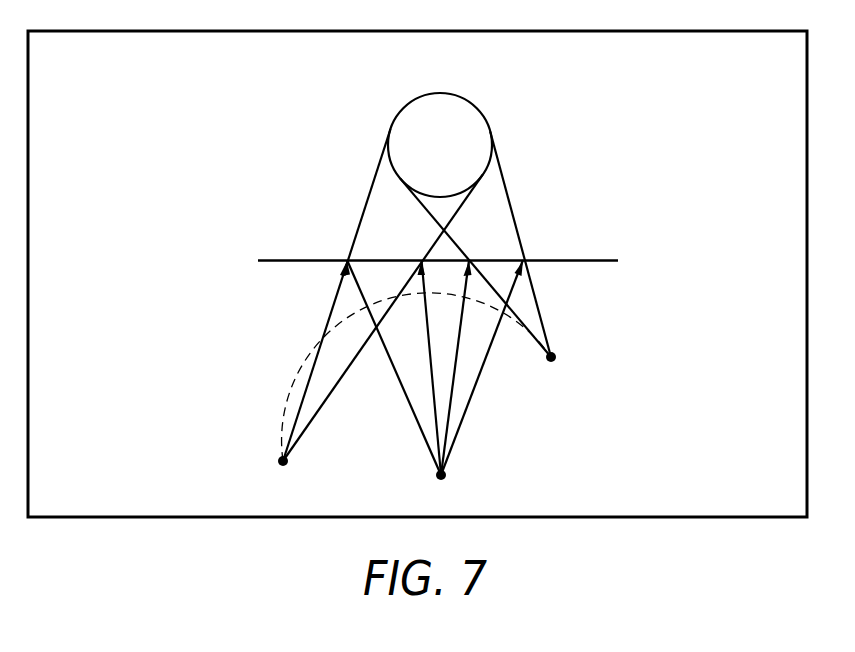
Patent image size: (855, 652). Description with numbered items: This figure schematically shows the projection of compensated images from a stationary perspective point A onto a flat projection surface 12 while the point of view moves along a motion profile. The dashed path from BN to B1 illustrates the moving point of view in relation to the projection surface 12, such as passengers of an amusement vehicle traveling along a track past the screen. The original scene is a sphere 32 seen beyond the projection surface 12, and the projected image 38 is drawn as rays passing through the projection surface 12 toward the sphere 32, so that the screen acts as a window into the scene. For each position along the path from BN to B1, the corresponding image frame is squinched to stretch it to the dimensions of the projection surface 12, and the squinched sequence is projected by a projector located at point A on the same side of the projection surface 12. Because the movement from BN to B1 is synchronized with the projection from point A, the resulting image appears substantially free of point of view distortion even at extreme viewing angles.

The sphere 32 is at (451, 120).
The projection surface 12 is at (598, 258).
The projected image 38 is at (422, 206).
The end point of motion profile B1 is at (303, 462).
The stationary perspective point A is at (452, 474).
The start point of motion profile BN is at (582, 359).